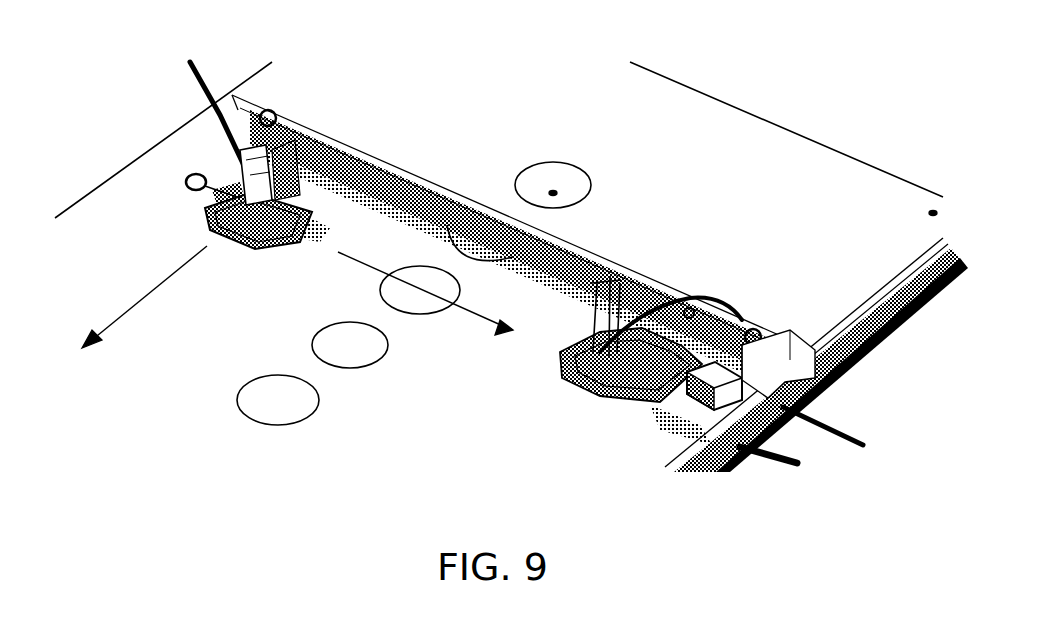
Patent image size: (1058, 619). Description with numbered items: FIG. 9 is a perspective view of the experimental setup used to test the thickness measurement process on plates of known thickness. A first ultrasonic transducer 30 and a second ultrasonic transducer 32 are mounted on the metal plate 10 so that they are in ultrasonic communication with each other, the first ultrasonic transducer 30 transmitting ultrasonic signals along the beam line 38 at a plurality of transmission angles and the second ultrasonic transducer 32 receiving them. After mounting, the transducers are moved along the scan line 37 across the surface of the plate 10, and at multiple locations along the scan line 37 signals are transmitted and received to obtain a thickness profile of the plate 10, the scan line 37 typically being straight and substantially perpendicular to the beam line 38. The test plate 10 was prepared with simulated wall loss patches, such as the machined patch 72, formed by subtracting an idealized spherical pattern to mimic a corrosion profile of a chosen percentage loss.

The metal plate 10 is at (850, 327).
The first ultrasonic transducer 30 is at (287, 173).
The second ultrasonic transducer 32 is at (707, 317).
The scan line 37 is at (238, 408).
The beam line 38 is at (472, 313).
The machined patch 72 is at (132, 308).